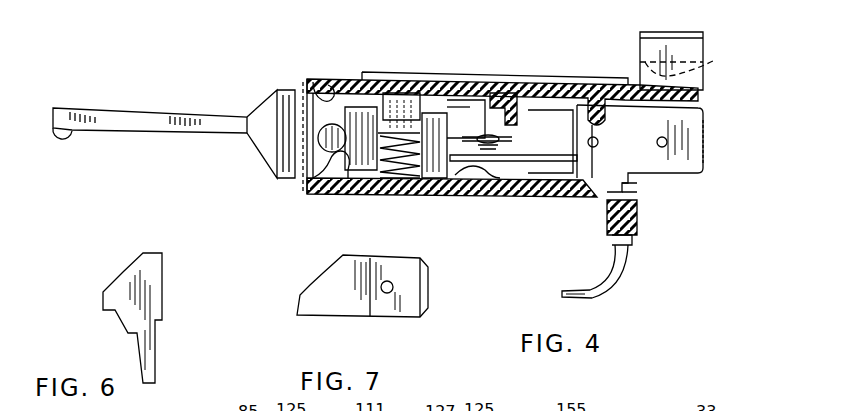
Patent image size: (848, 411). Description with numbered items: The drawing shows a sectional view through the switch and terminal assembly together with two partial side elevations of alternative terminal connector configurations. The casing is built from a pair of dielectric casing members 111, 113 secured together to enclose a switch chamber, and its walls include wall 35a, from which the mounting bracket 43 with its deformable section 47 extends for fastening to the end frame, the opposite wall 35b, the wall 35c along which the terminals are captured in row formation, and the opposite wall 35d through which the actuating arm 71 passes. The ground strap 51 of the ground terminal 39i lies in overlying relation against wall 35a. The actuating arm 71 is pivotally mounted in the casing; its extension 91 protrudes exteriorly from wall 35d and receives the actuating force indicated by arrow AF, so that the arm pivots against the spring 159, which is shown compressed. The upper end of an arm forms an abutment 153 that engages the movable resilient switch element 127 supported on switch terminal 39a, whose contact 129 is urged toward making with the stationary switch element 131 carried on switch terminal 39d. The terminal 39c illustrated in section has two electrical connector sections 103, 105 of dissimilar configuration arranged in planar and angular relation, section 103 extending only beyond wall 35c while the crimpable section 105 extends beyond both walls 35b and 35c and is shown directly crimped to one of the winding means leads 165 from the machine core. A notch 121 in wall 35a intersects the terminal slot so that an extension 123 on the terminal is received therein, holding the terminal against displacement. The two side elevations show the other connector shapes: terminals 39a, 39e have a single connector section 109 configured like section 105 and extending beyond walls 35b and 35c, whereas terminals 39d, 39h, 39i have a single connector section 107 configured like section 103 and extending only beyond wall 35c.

In FIG. 4, the extension 91 is at (124, 108).
In FIG. 4, the actuating force arrow AF is at (66, 142).
In FIG. 4, the actuating arm 71 is at (281, 88).
In FIG. 4, the casing wall 35d is at (310, 82).
In FIG. 4, the casing wall 35a is at (540, 86).
In FIG. 4, the casing wall 35b is at (555, 197).
In FIG. 4, the casing wall 35c is at (597, 198).
In FIG. 4, the ground strap 51 is at (410, 72).
In FIG. 4, the casing member 111 is at (300, 190).
In FIG. 4, the spring 159 is at (374, 170).
In FIG. 4, the abutment 153 is at (455, 186).
In FIG. 4, the casing member 113 is at (395, 100).
In FIG. 4, the movable resilient switch element 127 is at (478, 134).
In FIG. 4, the contact 129 is at (525, 143).
In FIG. 4, the stationary switch element 131 is at (508, 188).
In FIG. 4, the electrical connector section 103 is at (690, 160).
In FIG. 4, the terminal 39c is at (700, 145).
In FIG. 4, the extension 123 is at (600, 120).
In FIG. 4, the notch 121 is at (590, 100).
In FIG. 4, the deformable section 47 is at (696, 76).
In FIG. 4, the mounting bracket 43 is at (682, 32).
In FIG. 4, the electrical connector section 105 is at (640, 190).
In FIG. 4, the winding means lead 165 is at (618, 290).
In FIG. 6, the electrical connector section 109 is at (160, 348).
In FIG. 6, the switch terminal 39a is at (103, 292).
In FIG. 6, the switch terminal 39e is at (35, 294).
In FIG. 7, the electrical connector section 107 is at (410, 318).
In FIG. 7, the switch terminal 39d is at (302, 292).
In FIG. 7, the switch terminal 39h is at (235, 285).
In FIG. 7, the ground terminal 39i is at (232, 307).